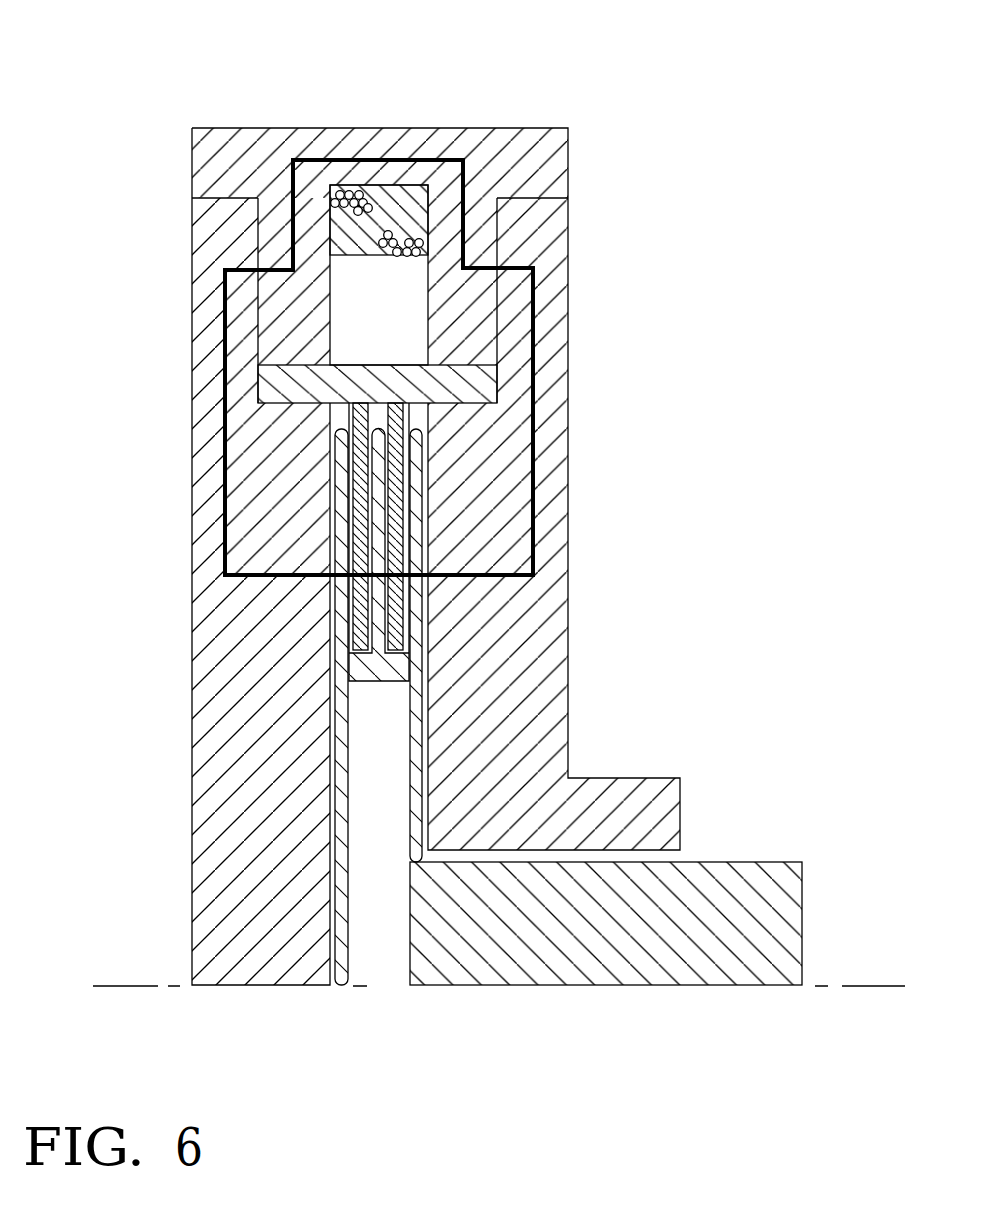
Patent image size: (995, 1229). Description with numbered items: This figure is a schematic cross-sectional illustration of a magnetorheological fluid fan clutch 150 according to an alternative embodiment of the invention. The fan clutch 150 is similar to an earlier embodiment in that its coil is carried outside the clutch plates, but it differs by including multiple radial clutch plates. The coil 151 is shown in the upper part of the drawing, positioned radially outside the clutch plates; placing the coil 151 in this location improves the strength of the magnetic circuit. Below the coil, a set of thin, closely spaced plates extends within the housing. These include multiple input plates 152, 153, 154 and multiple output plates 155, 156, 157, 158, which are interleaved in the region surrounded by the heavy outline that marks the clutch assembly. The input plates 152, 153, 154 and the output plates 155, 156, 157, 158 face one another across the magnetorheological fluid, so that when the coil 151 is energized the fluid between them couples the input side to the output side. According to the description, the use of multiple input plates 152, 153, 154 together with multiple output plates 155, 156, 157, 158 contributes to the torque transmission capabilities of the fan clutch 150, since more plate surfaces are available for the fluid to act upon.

The magnetorheological fluid fan clutch 150 is at (657, 208).
The coil 151 is at (383, 212).
The input plate 152 is at (340, 513).
The input plate 153 is at (377, 532).
The input plate 154 is at (417, 537).
The output plate 155 is at (300, 457).
The output plate 156 is at (360, 448).
The output plate 157 is at (397, 470).
The output plate 158 is at (478, 508).